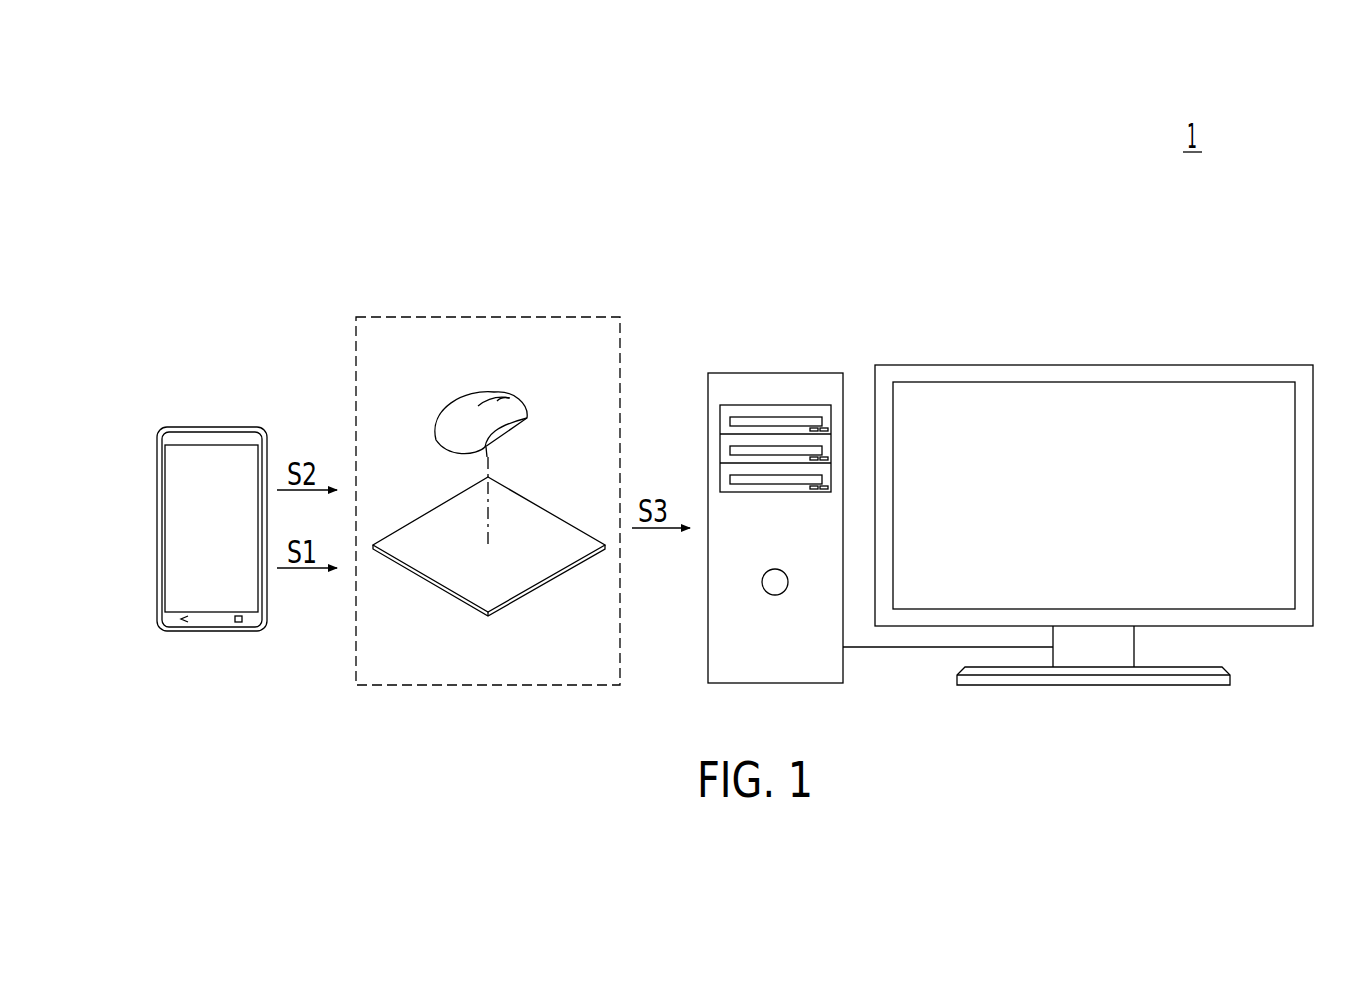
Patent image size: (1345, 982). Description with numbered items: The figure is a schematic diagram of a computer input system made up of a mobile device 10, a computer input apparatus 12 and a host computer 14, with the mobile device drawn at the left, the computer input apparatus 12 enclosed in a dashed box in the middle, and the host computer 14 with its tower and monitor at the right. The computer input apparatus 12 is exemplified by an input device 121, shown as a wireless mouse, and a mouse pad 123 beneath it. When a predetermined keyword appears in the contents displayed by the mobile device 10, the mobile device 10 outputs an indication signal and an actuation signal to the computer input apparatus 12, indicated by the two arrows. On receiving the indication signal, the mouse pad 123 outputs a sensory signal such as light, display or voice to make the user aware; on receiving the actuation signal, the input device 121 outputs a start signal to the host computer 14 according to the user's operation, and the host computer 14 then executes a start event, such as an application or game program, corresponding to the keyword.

The mobile device 10 is at (208, 416).
The computer input apparatus 12 is at (488, 450).
The input device 121 is at (528, 410).
The mouse pad 123 is at (522, 567).
The host computer 14 is at (778, 364).